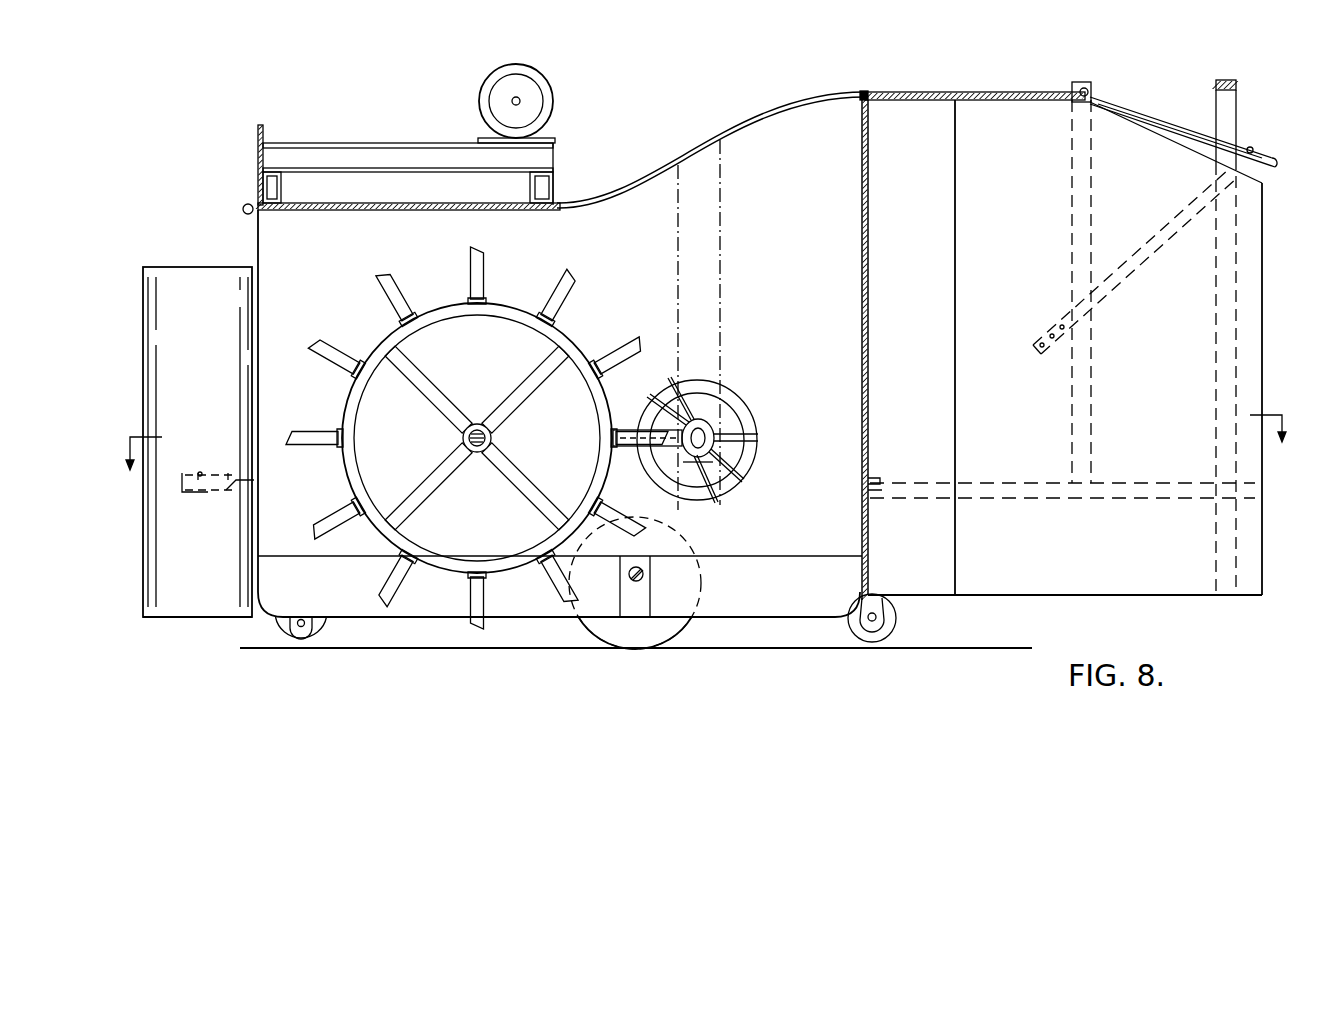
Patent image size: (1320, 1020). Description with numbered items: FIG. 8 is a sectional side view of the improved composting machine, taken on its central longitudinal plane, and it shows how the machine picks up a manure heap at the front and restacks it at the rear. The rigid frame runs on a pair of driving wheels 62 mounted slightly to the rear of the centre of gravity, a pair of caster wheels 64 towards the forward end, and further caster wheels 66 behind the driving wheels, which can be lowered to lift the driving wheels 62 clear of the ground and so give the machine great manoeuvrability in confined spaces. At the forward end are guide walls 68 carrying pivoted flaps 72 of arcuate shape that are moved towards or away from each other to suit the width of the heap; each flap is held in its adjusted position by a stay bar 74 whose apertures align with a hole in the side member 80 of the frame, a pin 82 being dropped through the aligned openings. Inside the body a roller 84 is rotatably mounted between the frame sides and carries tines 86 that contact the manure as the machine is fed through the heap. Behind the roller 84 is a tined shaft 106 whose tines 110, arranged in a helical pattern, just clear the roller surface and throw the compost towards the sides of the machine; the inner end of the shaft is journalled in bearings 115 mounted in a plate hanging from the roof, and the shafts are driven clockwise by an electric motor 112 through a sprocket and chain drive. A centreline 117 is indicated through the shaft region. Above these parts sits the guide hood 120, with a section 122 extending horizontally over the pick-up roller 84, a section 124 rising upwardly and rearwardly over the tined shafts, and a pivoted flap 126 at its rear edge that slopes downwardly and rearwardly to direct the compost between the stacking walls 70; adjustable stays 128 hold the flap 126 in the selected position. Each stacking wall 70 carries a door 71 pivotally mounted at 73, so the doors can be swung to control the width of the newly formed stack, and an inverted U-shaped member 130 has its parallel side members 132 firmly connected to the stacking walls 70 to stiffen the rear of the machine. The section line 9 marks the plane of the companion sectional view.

The section line 9- 9 is at (702, 456).
The driving wheels 62 is at (628, 630).
The caster wheels 64 is at (305, 640).
The further caster wheels 66 is at (870, 634).
The guide walls 68 is at (203, 278).
The stacking walls 70 is at (927, 128).
The door 71 is at (930, 297).
The pivoted flaps 72 is at (186, 605).
The pivot 73 is at (862, 244).
The stay bar 74 is at (218, 471).
The side member 80 is at (238, 486).
The pin 82 is at (201, 490).
The roller 84 is at (541, 330).
The tines 86 is at (297, 438).
The shaft 106 is at (714, 436).
The tines 110 is at (743, 443).
The electric motor 112 is at (553, 95).
The bearings 115 is at (717, 433).
The duct centerline 117 is at (712, 247).
The guide hood 120 is at (855, 85).
The section 122 is at (530, 210).
The section 124 is at (733, 122).
The pivoted flap 126 is at (1170, 123).
The adjustable stays 128 is at (1142, 264).
The inverted U-shaped member 130 is at (1202, 98).
The side members 132 is at (1238, 120).